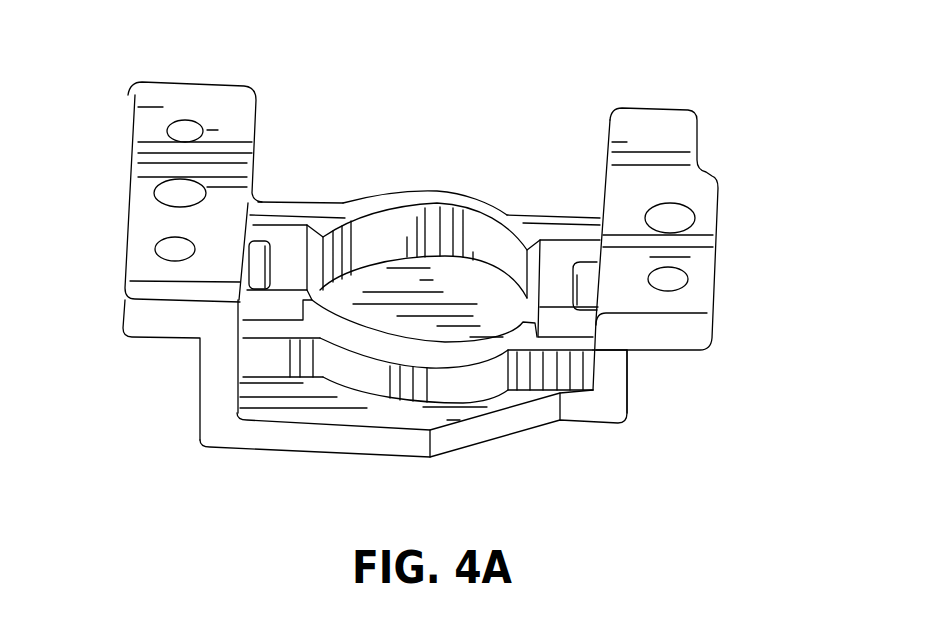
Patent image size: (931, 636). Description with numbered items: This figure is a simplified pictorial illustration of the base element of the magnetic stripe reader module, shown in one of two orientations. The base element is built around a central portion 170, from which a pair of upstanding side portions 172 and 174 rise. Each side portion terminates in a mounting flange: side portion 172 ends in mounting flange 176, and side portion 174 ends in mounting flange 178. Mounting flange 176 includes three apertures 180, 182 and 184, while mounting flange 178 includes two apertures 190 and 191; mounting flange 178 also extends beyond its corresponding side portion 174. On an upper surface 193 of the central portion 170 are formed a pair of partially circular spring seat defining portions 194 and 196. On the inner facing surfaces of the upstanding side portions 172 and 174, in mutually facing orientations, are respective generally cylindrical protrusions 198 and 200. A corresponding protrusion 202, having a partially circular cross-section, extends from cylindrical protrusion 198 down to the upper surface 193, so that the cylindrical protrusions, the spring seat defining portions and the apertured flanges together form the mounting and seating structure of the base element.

The central portion 170 is at (348, 403).
The upstanding side portion 172 is at (218, 395).
The upstanding side portion 174 is at (613, 373).
The mounting flange 176 is at (187, 100).
The mounting flange 178 is at (653, 124).
The aperture 180 is at (168, 128).
The aperture 182 is at (168, 193).
The aperture 184 is at (162, 248).
The aperture 190 is at (668, 221).
The aperture 191 is at (667, 278).
The upper surface 193 is at (307, 407).
The spring seat defining portion 194 is at (463, 380).
The spring seat defining portion 196 is at (405, 238).
The cylindrical protrusion 198 is at (262, 250).
The cylindrical protrusion 200 is at (587, 270).
The protrusion 202 is at (247, 295).